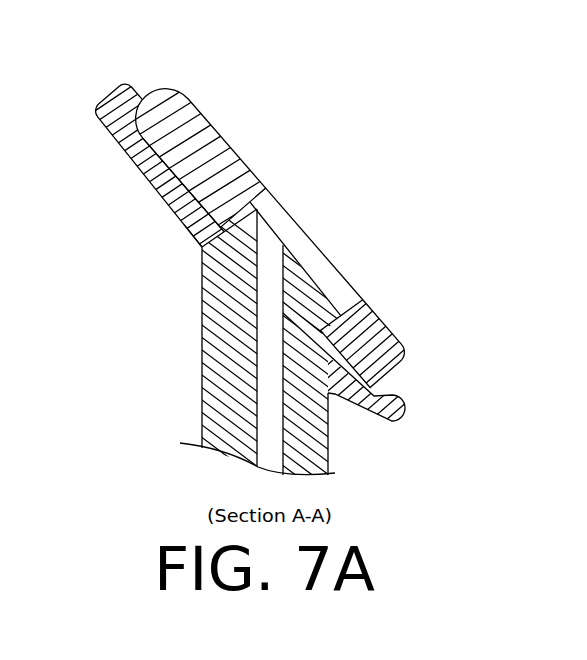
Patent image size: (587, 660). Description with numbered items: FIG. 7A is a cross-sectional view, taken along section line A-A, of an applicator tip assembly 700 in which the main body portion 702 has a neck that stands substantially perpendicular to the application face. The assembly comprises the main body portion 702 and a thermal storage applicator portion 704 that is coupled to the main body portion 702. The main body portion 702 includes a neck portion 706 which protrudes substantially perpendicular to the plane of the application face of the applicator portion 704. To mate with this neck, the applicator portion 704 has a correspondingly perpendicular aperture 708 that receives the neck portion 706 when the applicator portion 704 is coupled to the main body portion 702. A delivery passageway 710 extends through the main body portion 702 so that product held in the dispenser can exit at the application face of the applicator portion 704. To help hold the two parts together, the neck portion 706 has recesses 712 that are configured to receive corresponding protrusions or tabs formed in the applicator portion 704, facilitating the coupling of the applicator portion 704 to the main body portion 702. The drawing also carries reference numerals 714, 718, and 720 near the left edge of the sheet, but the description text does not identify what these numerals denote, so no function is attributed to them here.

The applicator tip assembly 700 is at (298, 168).
The main body portion 702 is at (212, 313).
The thermal storage applicator portion 704 is at (227, 153).
The neck portion 706 is at (300, 287).
The aperture 708 is at (300, 236).
The delivery passageway 710 is at (201, 246).
The recesses 712 is at (212, 252).
The component 714 is at (0, 418).
The component 718 is at (14, 565).
The component 720 is at (0, 640).